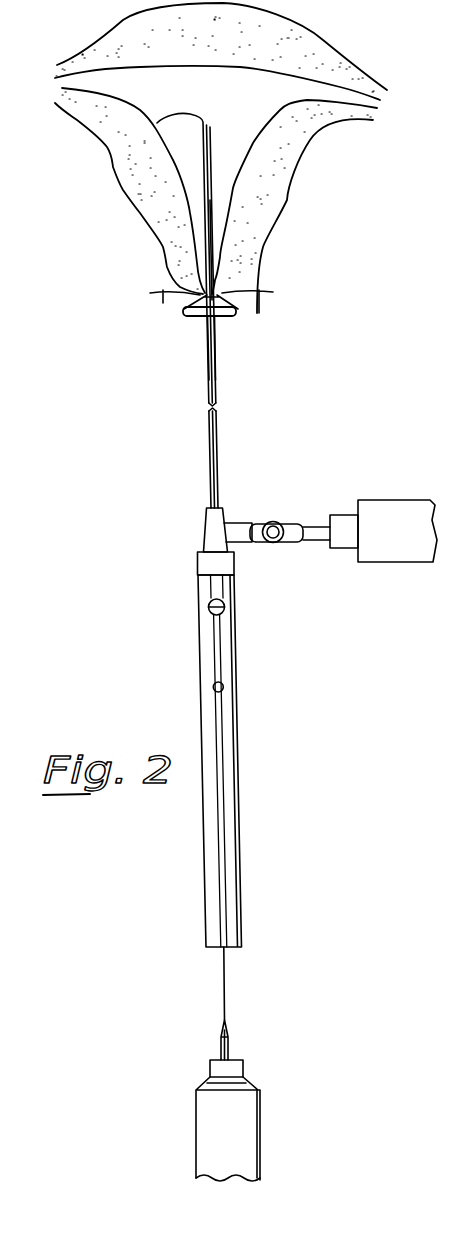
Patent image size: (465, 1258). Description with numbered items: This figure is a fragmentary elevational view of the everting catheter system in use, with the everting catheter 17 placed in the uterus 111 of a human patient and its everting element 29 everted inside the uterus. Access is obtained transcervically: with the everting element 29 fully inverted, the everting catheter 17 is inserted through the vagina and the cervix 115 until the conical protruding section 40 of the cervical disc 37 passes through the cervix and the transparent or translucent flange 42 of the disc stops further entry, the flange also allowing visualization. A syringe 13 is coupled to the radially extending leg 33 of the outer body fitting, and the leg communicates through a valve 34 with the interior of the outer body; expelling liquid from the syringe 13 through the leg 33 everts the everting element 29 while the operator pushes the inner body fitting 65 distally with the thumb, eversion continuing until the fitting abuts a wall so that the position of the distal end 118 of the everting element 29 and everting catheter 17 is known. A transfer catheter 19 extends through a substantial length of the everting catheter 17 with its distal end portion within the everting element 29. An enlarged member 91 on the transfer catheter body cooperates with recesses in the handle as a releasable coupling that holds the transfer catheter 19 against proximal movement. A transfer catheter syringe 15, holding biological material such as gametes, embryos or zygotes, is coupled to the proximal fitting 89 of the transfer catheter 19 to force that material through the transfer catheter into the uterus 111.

The distal end 118 is at (107, 145).
The uterus 111 is at (183, 150).
The everting catheter 17 is at (203, 218).
The everting element 29 is at (213, 205).
The cervix 115 is at (150, 293).
The conical protruding section 40 is at (273, 292).
The cervical disc 37 is at (231, 318).
The flange 42 is at (197, 317).
The radially extending leg 33 is at (238, 525).
The valve 34 is at (297, 540).
The syringe 13 is at (402, 512).
The inner body fitting 65 is at (217, 628).
The member 91 is at (222, 687).
The transfer catheter 19 is at (230, 990).
The proximal fitting 89 is at (233, 1045).
The transfer catheter syringe 15 is at (203, 1137).